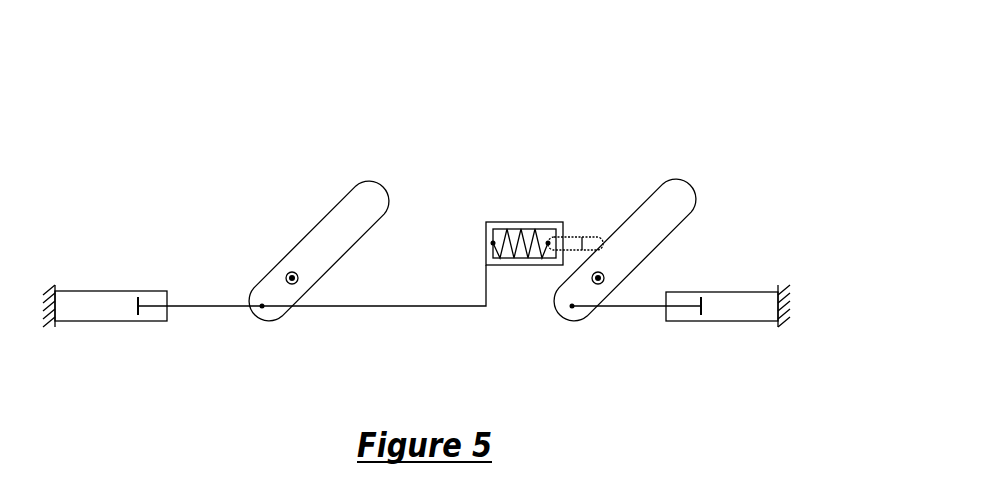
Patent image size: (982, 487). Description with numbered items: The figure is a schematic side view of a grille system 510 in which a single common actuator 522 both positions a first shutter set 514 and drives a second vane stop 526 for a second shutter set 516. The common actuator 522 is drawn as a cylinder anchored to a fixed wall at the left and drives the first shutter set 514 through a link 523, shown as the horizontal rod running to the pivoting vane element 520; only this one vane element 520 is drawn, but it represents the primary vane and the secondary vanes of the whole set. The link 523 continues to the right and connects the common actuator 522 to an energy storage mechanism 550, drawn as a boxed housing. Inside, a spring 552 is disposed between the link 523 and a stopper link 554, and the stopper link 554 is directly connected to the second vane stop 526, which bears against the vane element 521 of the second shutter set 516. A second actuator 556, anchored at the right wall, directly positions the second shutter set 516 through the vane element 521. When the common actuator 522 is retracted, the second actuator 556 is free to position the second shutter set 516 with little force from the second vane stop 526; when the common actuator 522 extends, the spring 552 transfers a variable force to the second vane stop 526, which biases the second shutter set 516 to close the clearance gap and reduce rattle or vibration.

The grille system 510 is at (160, 66).
The first shutter set 514 is at (274, 350).
The second shutter set 516 is at (705, 243).
The vane element 520 is at (327, 233).
The vane element 521 is at (667, 195).
The common actuator 522 is at (102, 302).
The link 523 is at (222, 305).
The second vane stop 526 is at (592, 235).
The energy storage mechanism 550 is at (505, 200).
The spring 552 is at (520, 250).
The stopper link 554 is at (570, 242).
The second actuator 556 is at (733, 312).